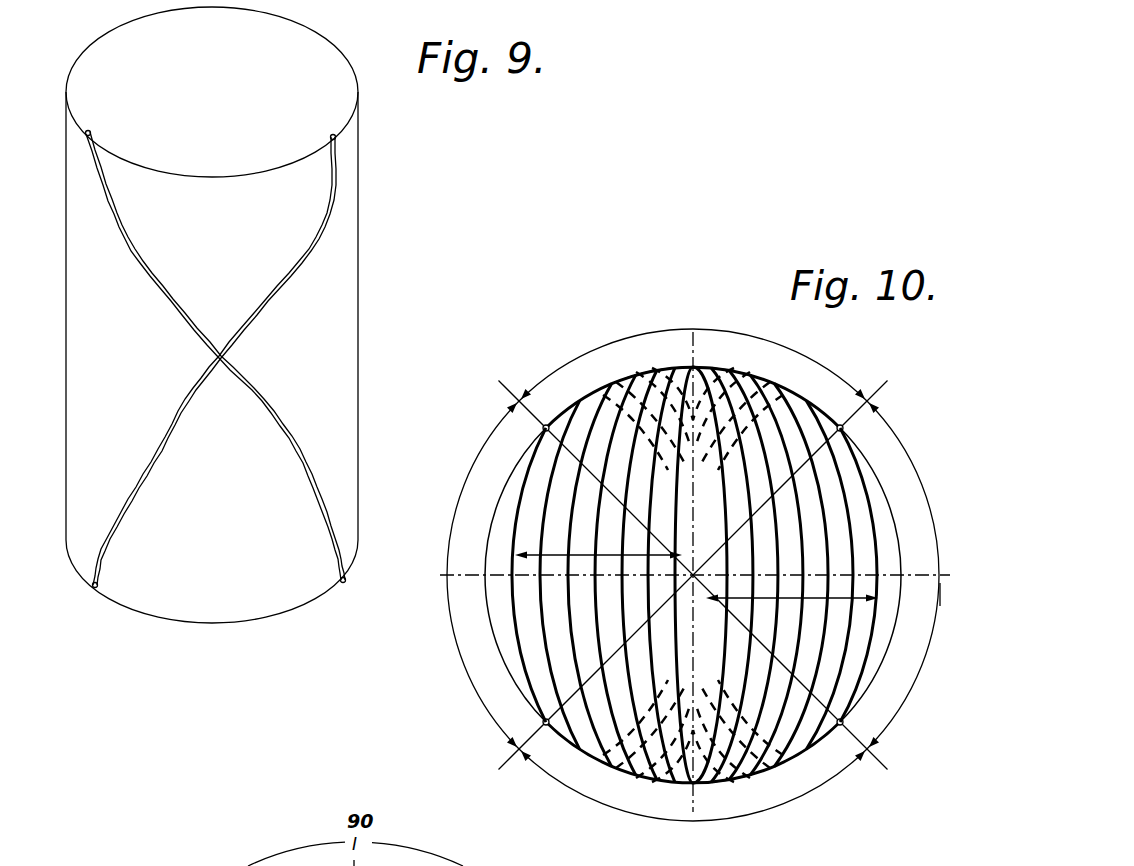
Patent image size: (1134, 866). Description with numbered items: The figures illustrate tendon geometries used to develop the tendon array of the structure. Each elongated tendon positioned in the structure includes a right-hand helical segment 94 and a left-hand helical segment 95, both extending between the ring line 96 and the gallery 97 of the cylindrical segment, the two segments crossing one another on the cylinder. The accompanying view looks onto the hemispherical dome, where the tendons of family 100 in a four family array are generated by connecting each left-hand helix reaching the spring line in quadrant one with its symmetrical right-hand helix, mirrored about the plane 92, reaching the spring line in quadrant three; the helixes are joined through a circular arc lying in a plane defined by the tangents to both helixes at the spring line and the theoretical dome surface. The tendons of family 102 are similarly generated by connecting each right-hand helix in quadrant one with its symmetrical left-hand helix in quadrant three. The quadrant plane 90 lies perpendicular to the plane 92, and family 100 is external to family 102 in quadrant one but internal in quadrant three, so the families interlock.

In FIG. 10, the quadrant plane 90 is at (696, 569).
In FIG. 10, the plane 92 is at (686, 585).
In FIG. 9, the right-hand helical segment 94 is at (312, 231).
In FIG. 9, the left-hand helical segment 95 is at (127, 243).
In FIG. 9, the ring line 96 is at (108, 33).
In FIG. 9, the gallery 97 is at (130, 610).
In FIG. 10, the tendon family 100 is at (789, 609).
In FIG. 10, the tendon family 102 is at (609, 543).